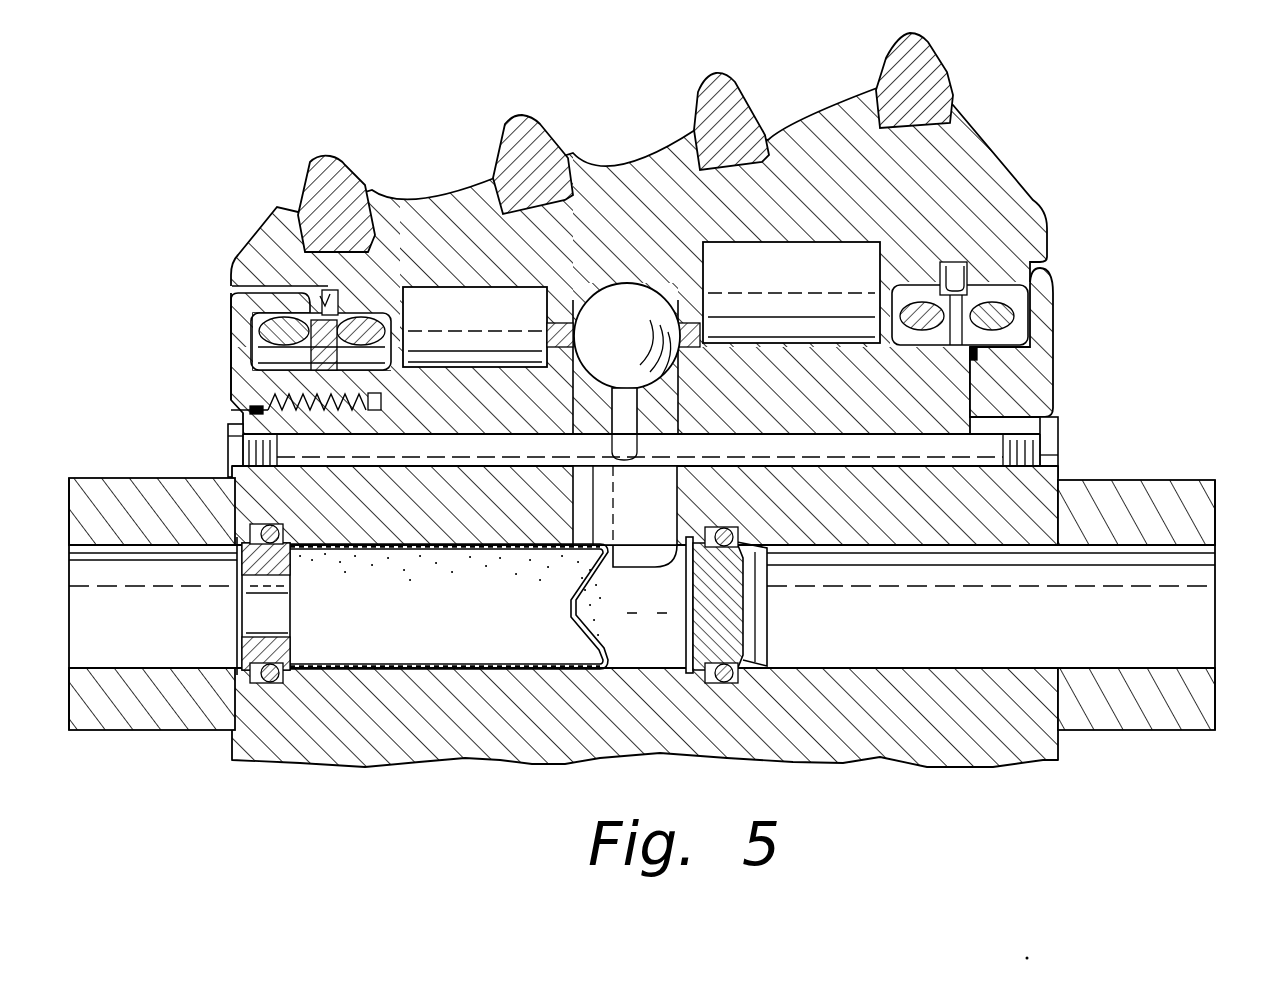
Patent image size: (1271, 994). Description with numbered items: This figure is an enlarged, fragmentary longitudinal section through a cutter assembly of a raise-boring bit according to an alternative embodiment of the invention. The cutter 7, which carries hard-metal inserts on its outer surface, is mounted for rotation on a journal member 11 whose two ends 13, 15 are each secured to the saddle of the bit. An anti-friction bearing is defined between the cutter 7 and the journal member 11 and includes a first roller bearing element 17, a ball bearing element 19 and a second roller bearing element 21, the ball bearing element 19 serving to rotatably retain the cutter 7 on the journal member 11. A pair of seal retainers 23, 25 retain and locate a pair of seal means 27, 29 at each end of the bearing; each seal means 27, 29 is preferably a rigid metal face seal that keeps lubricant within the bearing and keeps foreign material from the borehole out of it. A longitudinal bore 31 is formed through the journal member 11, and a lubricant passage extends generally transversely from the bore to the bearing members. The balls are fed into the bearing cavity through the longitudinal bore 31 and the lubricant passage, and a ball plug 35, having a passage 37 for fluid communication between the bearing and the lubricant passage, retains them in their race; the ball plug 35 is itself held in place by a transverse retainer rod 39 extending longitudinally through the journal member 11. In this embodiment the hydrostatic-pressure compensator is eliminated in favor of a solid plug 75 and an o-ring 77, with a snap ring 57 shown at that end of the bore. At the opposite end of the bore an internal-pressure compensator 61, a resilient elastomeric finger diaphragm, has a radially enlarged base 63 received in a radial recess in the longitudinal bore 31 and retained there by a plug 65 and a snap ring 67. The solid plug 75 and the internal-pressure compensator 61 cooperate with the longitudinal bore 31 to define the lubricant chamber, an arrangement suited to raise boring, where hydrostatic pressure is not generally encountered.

The cutter 7 is at (968, 150).
The journal member 11 is at (933, 387).
The end of journal member 13 is at (1150, 490).
The end of journal member 15 is at (152, 488).
The first roller bearing element 17 is at (818, 262).
The ball bearing element 19 is at (621, 297).
The second roller bearing element 21 is at (432, 303).
The seal retainer 23 is at (1037, 288).
The seal retainer 25 is at (240, 328).
The seal means 27 is at (960, 262).
The seal means 29 is at (322, 300).
The longitudinal bore 31 is at (1177, 668).
The ball plug 35 is at (673, 410).
The passage 37 is at (612, 402).
The transverse retainer rod 39 is at (815, 443).
The snap ring 57 is at (690, 668).
The internal-pressure compensator 61 is at (497, 580).
The base 63 is at (268, 527).
The plug 65 is at (295, 572).
The snap ring 67 is at (237, 673).
The solid plug 75 is at (730, 622).
The o-ring 77 is at (727, 527).